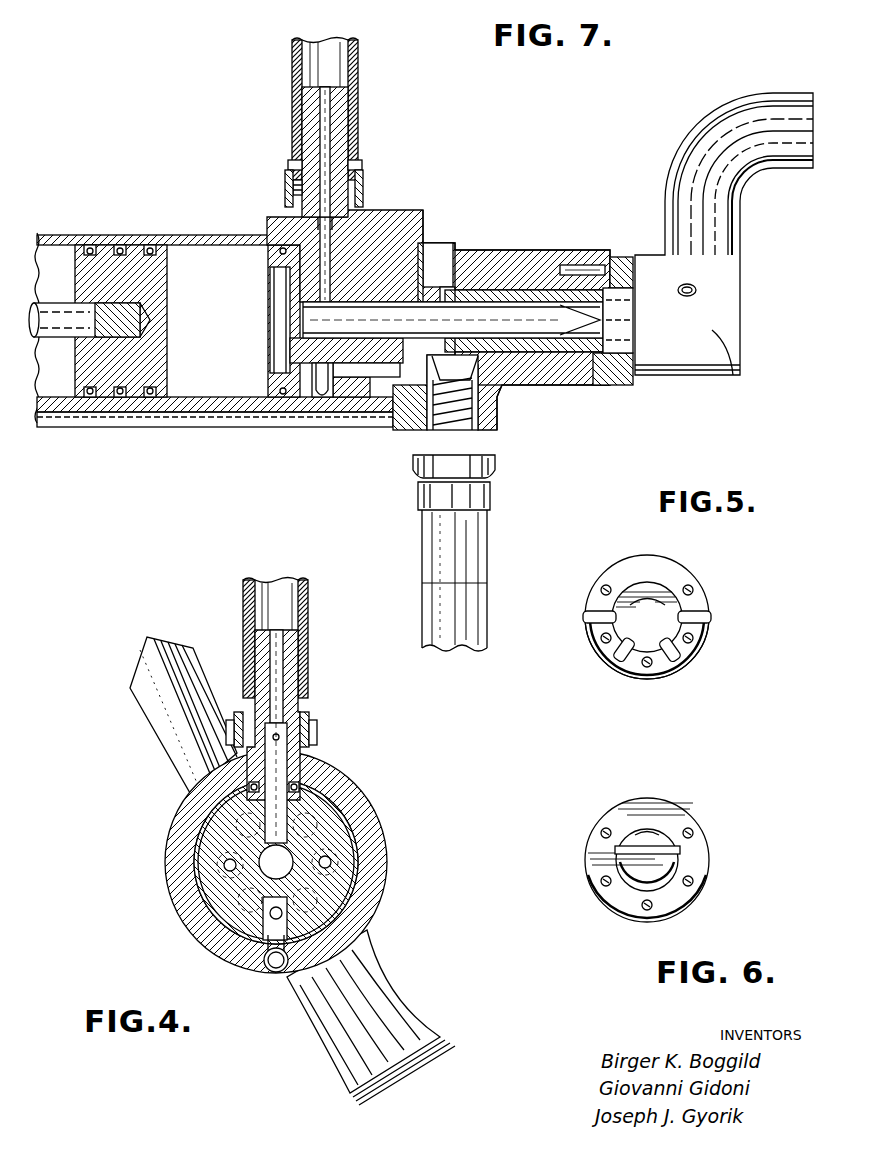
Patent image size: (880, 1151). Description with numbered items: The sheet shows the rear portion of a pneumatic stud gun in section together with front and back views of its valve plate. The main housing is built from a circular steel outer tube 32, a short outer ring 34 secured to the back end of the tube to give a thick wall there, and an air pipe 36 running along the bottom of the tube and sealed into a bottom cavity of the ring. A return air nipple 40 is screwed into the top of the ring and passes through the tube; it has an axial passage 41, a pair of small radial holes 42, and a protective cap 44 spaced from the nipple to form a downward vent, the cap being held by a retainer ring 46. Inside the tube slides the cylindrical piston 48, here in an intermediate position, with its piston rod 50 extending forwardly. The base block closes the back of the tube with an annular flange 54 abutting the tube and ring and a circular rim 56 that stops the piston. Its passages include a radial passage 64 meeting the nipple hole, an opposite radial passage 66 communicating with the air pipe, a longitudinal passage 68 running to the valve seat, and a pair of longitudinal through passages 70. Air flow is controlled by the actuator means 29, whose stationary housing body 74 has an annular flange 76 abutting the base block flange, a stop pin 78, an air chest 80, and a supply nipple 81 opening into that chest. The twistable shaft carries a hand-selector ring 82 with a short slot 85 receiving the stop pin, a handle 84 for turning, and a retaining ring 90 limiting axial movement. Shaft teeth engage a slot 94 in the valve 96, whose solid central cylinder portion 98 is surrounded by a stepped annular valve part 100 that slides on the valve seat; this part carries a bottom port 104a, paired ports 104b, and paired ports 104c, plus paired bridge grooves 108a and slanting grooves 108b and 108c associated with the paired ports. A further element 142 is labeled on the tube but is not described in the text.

In FIG. 7, the actuator means 29 is at (582, 441).
In FIG. 7, the outer tube 32 is at (121, 243).
In FIG. 7, the outer ring 34 is at (300, 425).
In FIG. 4, the outer ring 34 is at (375, 905).
In FIG. 7, the air pipe 36 is at (160, 428).
In FIG. 4, the air pipe 36 is at (282, 975).
In FIG. 7, the return air nipple 40 is at (300, 105).
In FIG. 4, the return air nipple 40 is at (300, 660).
In FIG. 7, the axial passage 41 is at (300, 232).
In FIG. 4, the axial passage 41 is at (284, 652).
In FIG. 7, the radial holes 42 is at (363, 186).
In FIG. 4, the radial holes 42 is at (309, 720).
In FIG. 7, the protective cap 44 is at (357, 160).
In FIG. 4, the protective cap 44 is at (317, 743).
In FIG. 7, the retainer ring 46 is at (298, 172).
In FIG. 7, the cylindrical piston 48 is at (166, 301).
In FIG. 7, the piston rod 50 is at (62, 330).
In FIG. 7, the annular flange 54 is at (400, 212).
In FIG. 7, the circular rim 56 is at (276, 315).
In FIG. 4, the radial passage 64 is at (323, 812).
In FIG. 7, the radial passage 66 is at (324, 400).
In FIG. 4, the radial passage 66 is at (262, 922).
In FIG. 7, the longitudinal passage 68 is at (390, 375).
In FIG. 4, the through passages 70 is at (224, 866).
In FIG. 7, the housing body 74 is at (515, 262).
In FIG. 7, the annular flange 76 is at (414, 223).
In FIG. 7, the stop pin 78 is at (580, 267).
In FIG. 7, the air chest 80 is at (447, 277).
In FIG. 7, the nipple 81 is at (486, 427).
In FIG. 7, the hand-selector ring 82 is at (625, 388).
In FIG. 7, the handle 84 is at (722, 226).
In FIG. 4, the handle 84 is at (133, 686).
In FIG. 7, the slot 85 is at (600, 262).
In FIG. 7, the retaining ring 90 is at (498, 396).
In FIG. 6, the slot 94 is at (672, 862).
In FIG. 7, the valve 96 is at (437, 262).
In FIG. 5, the valve 96 is at (667, 541).
In FIG. 6, the valve 96 is at (568, 865).
In FIG. 5, the central cylinder portion 98 is at (656, 590).
In FIG. 6, the central cylinder portion 98 is at (652, 887).
In FIG. 5, the annular valve part 100 is at (679, 577).
In FIG. 6, the annular valve part 100 is at (680, 818).
In FIG. 5, the bottom port 104a is at (647, 667).
In FIG. 6, the bottom port 104a is at (647, 910).
In FIG. 5, the paired ports 104b is at (606, 585).
In FIG. 6, the paired ports 104b is at (693, 833).
In FIG. 5, the paired ports 104c is at (692, 592).
In FIG. 6, the paired ports 104c is at (606, 828).
In FIG. 5, the paired grooves 108a is at (590, 617).
In FIG. 5, the slanting groove 108b is at (628, 660).
In FIG. 5, the slanting groove 108c is at (668, 660).
In FIG. 7, the tube 142 is at (352, 55).
In FIG. 4, the tube 142 is at (308, 598).